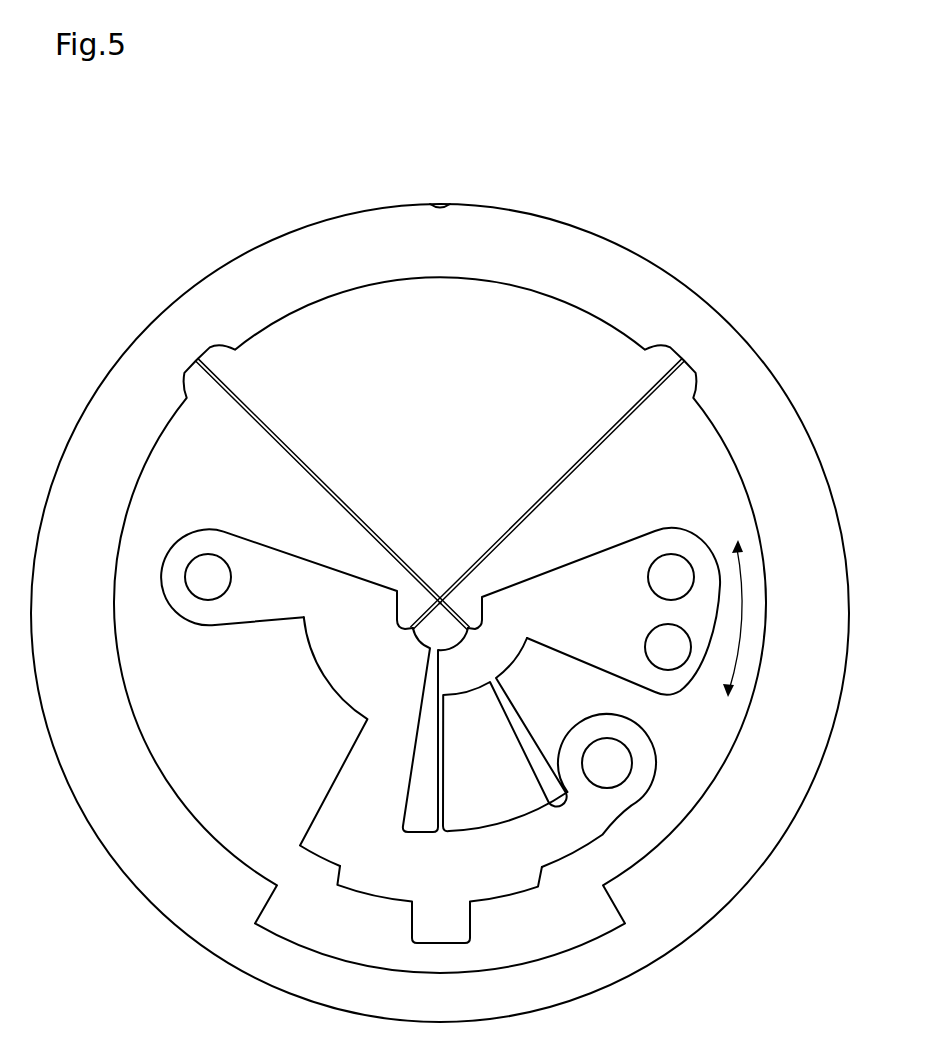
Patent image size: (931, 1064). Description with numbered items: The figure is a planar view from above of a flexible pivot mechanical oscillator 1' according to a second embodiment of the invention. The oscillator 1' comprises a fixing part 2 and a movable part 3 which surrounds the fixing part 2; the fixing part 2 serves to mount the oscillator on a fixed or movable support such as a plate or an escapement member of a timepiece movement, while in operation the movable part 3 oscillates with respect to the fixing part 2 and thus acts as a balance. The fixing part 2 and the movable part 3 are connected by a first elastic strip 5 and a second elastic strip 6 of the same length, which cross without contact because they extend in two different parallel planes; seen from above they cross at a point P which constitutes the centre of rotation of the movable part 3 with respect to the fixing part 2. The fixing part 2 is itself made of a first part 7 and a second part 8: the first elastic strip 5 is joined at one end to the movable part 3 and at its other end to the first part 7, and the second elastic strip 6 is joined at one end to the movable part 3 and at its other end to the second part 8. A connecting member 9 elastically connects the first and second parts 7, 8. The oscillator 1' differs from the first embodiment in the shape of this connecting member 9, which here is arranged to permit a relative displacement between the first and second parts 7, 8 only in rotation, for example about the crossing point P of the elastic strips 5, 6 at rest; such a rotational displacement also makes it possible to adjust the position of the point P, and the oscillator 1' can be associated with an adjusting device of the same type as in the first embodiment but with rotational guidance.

The flexible pivot mechanical oscillator 1' is at (440, 581).
The fixing part 2 is at (689, 706).
The movable part 3 is at (235, 268).
The first elastic strip 5 is at (578, 462).
The second elastic strip 6 is at (290, 447).
The first part 7 is at (262, 552).
The second part 8 is at (624, 546).
The connecting member 9 is at (519, 908).
The crossing point P is at (440, 598).